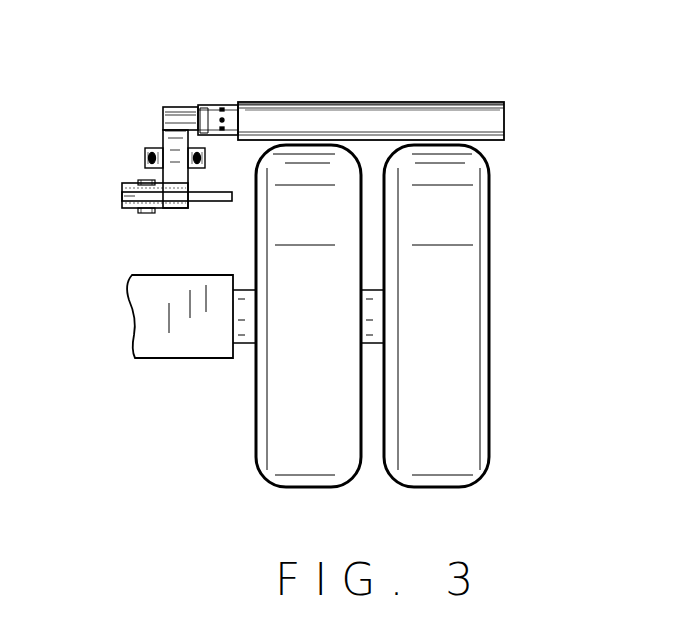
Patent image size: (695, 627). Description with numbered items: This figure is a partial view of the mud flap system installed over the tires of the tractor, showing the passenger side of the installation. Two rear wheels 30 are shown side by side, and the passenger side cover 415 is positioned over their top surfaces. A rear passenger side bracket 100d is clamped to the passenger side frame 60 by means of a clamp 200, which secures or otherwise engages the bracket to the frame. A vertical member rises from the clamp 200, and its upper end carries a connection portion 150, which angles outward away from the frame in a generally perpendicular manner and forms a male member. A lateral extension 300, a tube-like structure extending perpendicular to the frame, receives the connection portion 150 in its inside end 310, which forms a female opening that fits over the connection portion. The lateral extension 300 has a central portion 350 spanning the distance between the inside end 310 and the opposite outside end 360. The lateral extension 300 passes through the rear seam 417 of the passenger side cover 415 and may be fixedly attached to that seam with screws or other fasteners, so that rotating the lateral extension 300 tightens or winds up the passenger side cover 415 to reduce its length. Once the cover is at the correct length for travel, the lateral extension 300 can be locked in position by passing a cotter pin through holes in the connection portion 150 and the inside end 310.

The connection portion 150 is at (177, 110).
The inside end 310 is at (200, 110).
The lateral extension 300 is at (210, 108).
The central portion 350 is at (345, 120).
The passenger side cover 415 is at (427, 103).
The rear seam 417 is at (457, 120).
The outside end 360 is at (504, 122).
The rear passenger side bracket 100d is at (175, 147).
The passenger side frame 60 is at (137, 197).
The clamp 200 is at (175, 210).
The rear wheels 30 is at (492, 442).